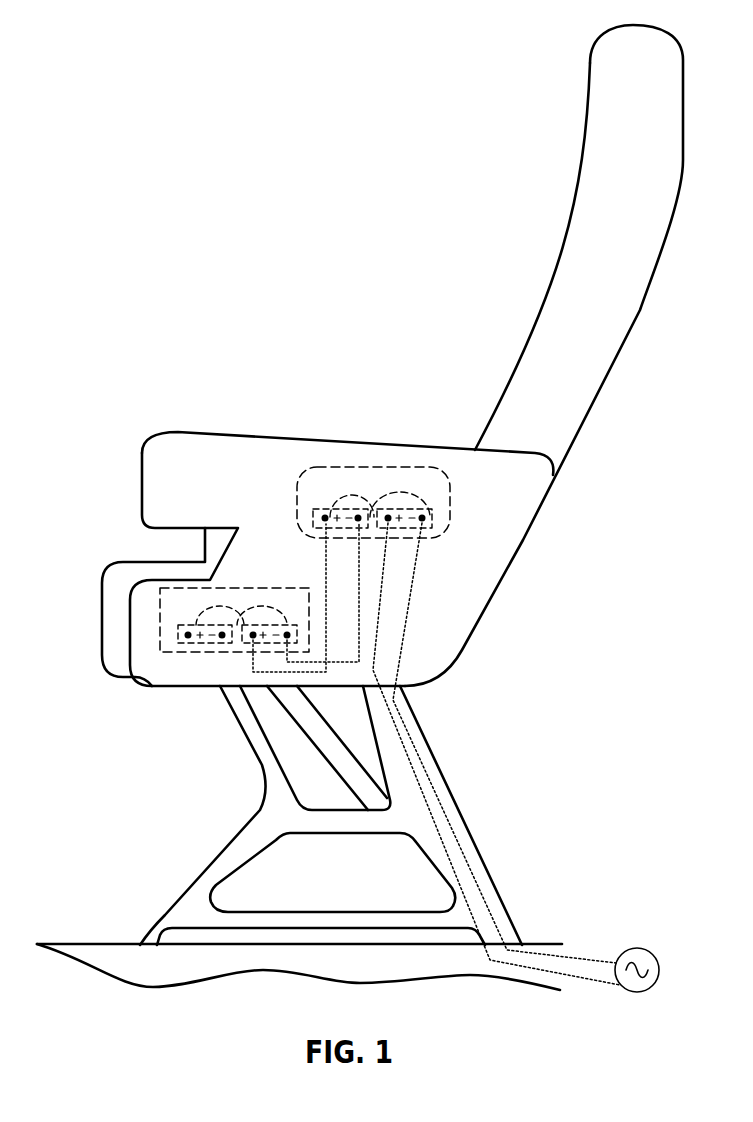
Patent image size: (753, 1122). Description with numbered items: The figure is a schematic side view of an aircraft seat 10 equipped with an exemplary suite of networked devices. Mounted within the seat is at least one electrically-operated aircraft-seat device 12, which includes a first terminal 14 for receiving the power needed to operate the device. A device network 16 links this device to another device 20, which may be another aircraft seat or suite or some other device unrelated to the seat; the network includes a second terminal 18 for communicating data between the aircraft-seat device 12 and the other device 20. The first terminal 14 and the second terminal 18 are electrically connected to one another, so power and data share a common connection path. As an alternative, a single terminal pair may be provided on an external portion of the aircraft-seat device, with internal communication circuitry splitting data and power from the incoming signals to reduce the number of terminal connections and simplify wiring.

The aircraft seat 10 is at (148, 406).
The electrically-operated aircraft-seat device 12 is at (337, 467).
The first terminal 14 is at (432, 513).
The device network 16 is at (313, 567).
The second terminal 18 is at (321, 512).
The another device 20 is at (183, 652).